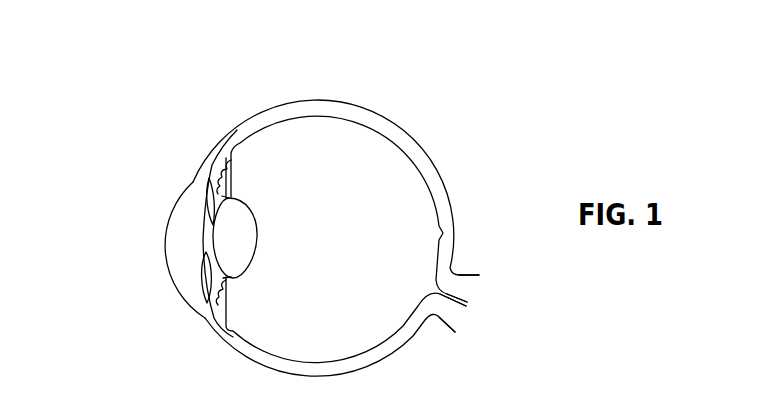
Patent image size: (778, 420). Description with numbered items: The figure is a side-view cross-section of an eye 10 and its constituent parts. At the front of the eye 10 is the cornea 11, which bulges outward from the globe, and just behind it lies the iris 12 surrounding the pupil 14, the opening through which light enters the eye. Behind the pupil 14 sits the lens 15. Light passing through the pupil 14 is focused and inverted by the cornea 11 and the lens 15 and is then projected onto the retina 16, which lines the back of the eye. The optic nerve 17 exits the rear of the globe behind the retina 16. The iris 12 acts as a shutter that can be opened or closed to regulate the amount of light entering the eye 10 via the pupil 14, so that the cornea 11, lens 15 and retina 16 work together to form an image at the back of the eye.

The eye 10 is at (164, 48).
The cornea 11 is at (165, 276).
The iris 12 is at (198, 192).
The pupil 14 is at (198, 234).
The lens 15 is at (250, 270).
The retina 16 is at (432, 169).
The optic nerve 17 is at (465, 320).